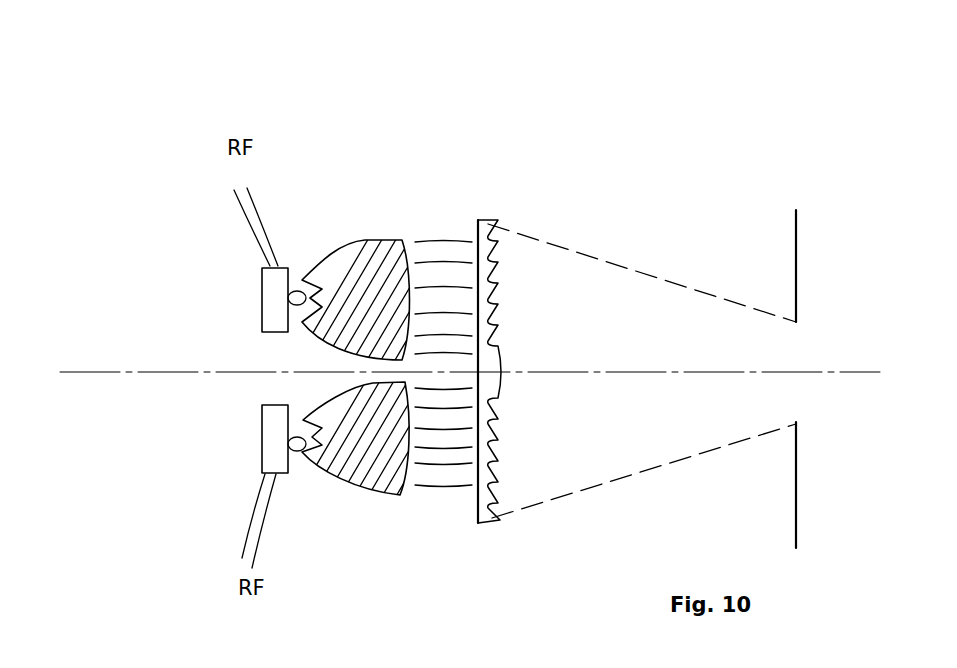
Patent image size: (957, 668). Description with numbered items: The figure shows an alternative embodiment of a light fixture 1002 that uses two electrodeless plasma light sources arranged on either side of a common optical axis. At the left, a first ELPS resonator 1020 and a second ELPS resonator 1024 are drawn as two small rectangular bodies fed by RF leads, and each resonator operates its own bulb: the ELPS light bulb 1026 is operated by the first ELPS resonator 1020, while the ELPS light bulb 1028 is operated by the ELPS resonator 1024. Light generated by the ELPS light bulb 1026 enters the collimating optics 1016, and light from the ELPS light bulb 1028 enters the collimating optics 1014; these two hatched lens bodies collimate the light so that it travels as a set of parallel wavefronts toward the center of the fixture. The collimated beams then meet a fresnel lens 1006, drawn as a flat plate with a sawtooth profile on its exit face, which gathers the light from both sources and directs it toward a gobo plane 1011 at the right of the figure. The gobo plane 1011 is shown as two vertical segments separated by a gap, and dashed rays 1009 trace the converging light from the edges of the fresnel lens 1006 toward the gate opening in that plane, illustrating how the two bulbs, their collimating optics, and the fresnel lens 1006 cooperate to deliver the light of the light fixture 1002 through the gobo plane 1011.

The light fixture 1002 is at (430, 65).
The fresnel lens 1006 is at (486, 218).
The light beam / image 1009 is at (777, 350).
The gobo plane 1011 is at (804, 143).
The collimating optics 1014 is at (348, 492).
The collimating optics 1016 is at (357, 236).
The first ELPS resonator 1020 is at (262, 300).
The ELPS resonator 1024 is at (262, 437).
The ELPS light bulb 1026 is at (291, 290).
The ELPS light bulb 1028 is at (297, 452).